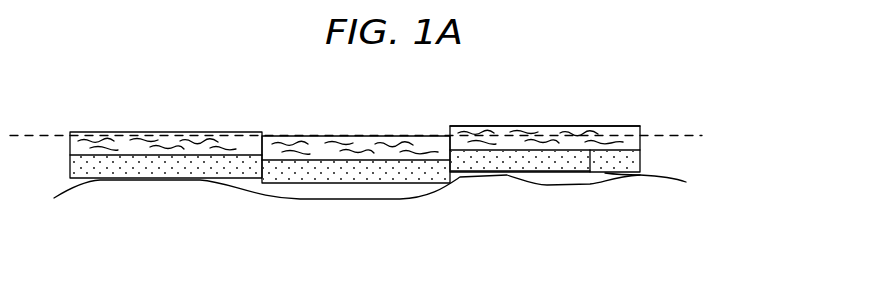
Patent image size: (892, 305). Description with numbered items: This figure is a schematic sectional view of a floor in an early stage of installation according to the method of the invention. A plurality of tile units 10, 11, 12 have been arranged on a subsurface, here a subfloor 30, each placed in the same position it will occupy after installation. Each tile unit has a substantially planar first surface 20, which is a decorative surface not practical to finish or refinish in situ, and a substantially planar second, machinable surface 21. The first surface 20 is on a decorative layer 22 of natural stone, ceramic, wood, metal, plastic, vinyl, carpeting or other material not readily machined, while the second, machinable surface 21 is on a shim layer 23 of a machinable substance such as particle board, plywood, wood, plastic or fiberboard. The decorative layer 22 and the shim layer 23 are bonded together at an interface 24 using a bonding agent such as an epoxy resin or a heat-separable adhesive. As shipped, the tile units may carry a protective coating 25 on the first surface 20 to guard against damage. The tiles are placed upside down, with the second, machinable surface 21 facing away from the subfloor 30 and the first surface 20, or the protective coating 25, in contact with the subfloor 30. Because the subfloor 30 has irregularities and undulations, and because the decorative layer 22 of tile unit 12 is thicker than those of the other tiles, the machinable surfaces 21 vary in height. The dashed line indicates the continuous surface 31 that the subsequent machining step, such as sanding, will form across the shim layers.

The tile unit 10 is at (131, 132).
The tile unit 11 is at (326, 136).
The tile unit 12 is at (593, 150).
The first surface 20 is at (618, 182).
The second, machinable surface 21 is at (630, 126).
The decorative layer 22 is at (593, 198).
The shim layer 23 is at (590, 126).
The interface 24 is at (590, 172).
The protective coating 25 is at (545, 172).
The subfloor 30 is at (366, 199).
The continuous surface 31 is at (683, 134).